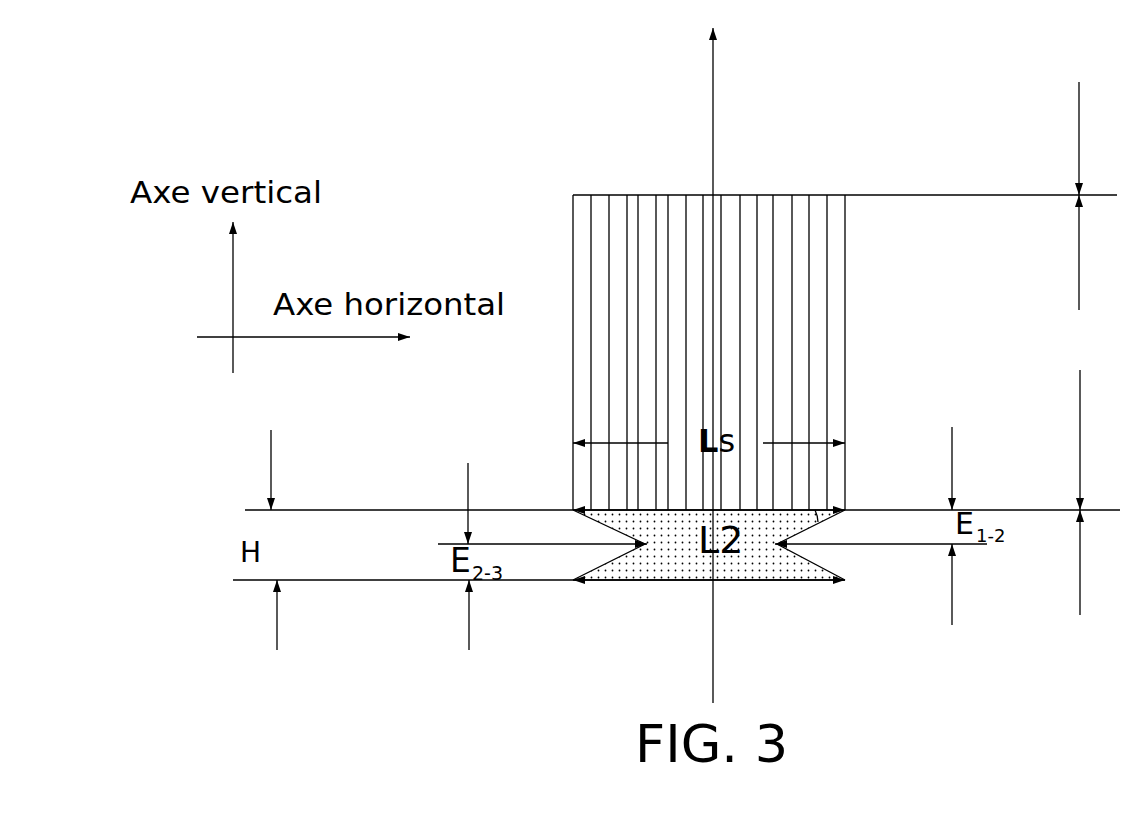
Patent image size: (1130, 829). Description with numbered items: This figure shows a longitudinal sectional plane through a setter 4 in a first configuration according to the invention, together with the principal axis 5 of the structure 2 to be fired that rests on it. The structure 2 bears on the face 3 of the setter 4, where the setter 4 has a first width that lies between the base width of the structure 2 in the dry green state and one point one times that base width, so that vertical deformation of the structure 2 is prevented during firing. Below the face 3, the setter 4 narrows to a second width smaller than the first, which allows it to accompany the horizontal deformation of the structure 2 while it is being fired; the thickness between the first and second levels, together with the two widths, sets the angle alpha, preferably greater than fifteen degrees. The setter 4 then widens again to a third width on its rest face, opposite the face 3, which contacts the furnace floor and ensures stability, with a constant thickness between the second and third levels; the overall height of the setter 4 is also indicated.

The structure 2 is at (833, 372).
The face 3 is at (735, 510).
The setter 4 is at (763, 573).
The principal axis 5 is at (713, 147).